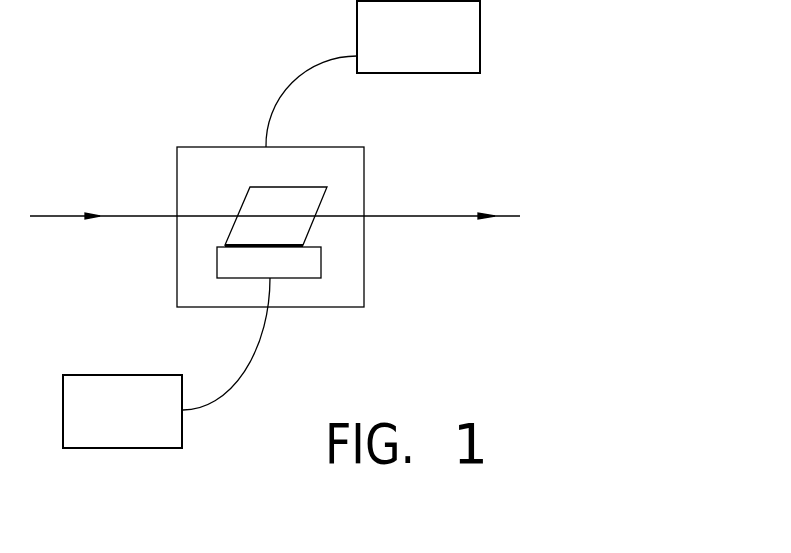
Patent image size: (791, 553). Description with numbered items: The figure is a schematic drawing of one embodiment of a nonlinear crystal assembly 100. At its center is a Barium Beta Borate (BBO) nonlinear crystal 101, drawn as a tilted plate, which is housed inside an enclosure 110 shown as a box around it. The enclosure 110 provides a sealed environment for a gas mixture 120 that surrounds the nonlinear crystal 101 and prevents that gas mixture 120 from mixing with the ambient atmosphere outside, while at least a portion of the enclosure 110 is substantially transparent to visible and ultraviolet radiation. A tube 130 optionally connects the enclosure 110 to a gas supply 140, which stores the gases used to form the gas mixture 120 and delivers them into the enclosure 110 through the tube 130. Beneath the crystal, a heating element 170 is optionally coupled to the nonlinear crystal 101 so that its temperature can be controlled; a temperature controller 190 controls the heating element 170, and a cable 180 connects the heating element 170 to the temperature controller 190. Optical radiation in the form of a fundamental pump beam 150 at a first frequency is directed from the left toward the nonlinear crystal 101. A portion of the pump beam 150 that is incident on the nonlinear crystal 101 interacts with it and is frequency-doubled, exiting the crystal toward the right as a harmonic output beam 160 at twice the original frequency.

The nonlinear crystal assembly 100 is at (87, 131).
The nonlinear crystal 101 is at (259, 223).
The enclosure 110 is at (365, 192).
The gas mixture 120 is at (215, 180).
The tube 130 is at (304, 74).
The gas supply 140 is at (460, 37).
The fundamental pump beam 150 is at (54, 216).
The harmonic output beam 160 is at (437, 218).
The heating element 170 is at (298, 279).
The cable 180 is at (259, 342).
The temperature controller 190 is at (98, 403).